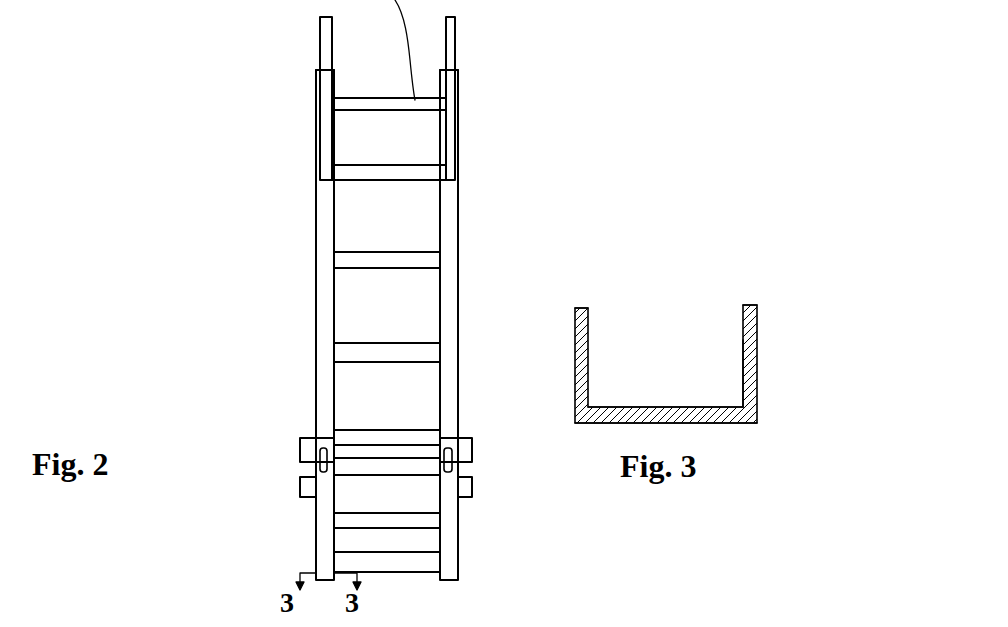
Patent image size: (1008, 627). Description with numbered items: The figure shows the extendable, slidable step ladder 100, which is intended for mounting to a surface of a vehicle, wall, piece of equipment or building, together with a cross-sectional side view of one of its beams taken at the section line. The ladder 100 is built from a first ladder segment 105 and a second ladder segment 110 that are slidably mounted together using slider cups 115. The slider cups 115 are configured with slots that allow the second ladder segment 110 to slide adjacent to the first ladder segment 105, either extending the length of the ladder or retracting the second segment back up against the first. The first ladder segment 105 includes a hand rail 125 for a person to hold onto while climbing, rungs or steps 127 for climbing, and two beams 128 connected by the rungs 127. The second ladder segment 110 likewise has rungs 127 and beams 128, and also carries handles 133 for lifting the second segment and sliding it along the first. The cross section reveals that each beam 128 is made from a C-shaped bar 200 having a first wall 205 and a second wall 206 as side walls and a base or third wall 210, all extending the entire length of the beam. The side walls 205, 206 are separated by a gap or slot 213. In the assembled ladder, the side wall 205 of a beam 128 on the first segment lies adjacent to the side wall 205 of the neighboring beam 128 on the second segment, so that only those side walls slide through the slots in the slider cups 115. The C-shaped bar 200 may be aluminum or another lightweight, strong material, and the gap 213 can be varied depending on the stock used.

In FIG. 2, the extendable step ladder 100 is at (185, 153).
In FIG. 2, the first ladder segment 105 is at (460, 242).
In FIG. 2, the second ladder segment 110 is at (462, 545).
In FIG. 2, the slider cups 115 is at (302, 438).
In FIG. 2, the hand rail 125 is at (318, 45).
In FIG. 2, the rungs or steps 127 is at (320, 0).
In FIG. 2, the beams 128 is at (318, 223).
In FIG. 3, the beams 128 is at (693, 250).
In FIG. 2, the handles 133 is at (317, 460).
In FIG. 3, the C-shaped bar 200 is at (747, 320).
In FIG. 3, the first wall 205 is at (587, 365).
In FIG. 3, the second wall 206 is at (745, 365).
In FIG. 3, the base wall 210 is at (710, 420).
In FIG. 3, the gap or slot 213 is at (657, 348).